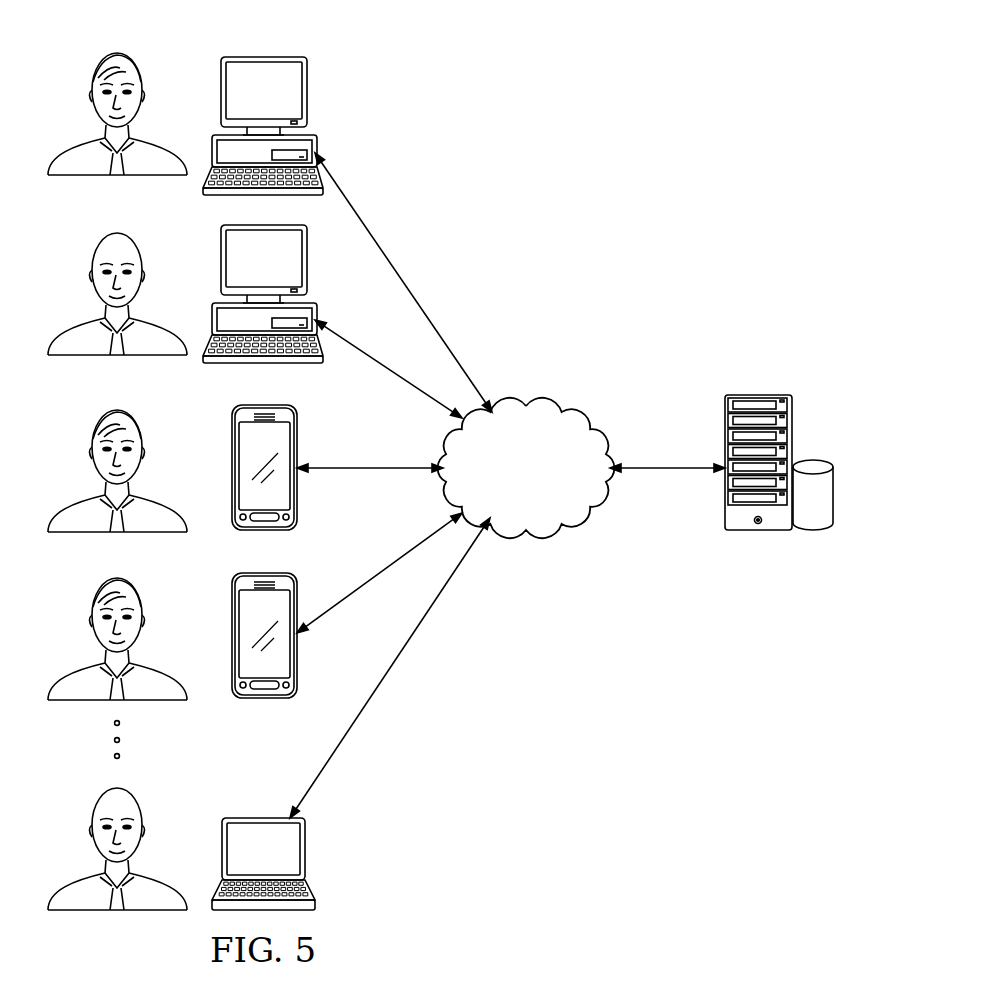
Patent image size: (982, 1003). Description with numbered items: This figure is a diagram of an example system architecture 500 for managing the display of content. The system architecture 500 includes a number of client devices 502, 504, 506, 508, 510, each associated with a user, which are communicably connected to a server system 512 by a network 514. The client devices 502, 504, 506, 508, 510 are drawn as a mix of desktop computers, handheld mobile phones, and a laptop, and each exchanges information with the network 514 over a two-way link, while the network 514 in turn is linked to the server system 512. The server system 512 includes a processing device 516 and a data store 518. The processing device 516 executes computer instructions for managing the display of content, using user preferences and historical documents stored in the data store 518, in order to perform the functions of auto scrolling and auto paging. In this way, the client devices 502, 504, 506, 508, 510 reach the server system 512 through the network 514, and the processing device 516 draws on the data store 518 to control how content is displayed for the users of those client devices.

The system architecture 500 is at (627, 100).
The client device 502 is at (263, 57).
The client device 504 is at (221, 260).
The client device 506 is at (232, 435).
The client device 508 is at (262, 700).
The client device 510 is at (263, 818).
The server system 512 is at (768, 478).
The network 514 is at (543, 402).
The processing device 516 is at (758, 395).
The data store 518 is at (813, 460).